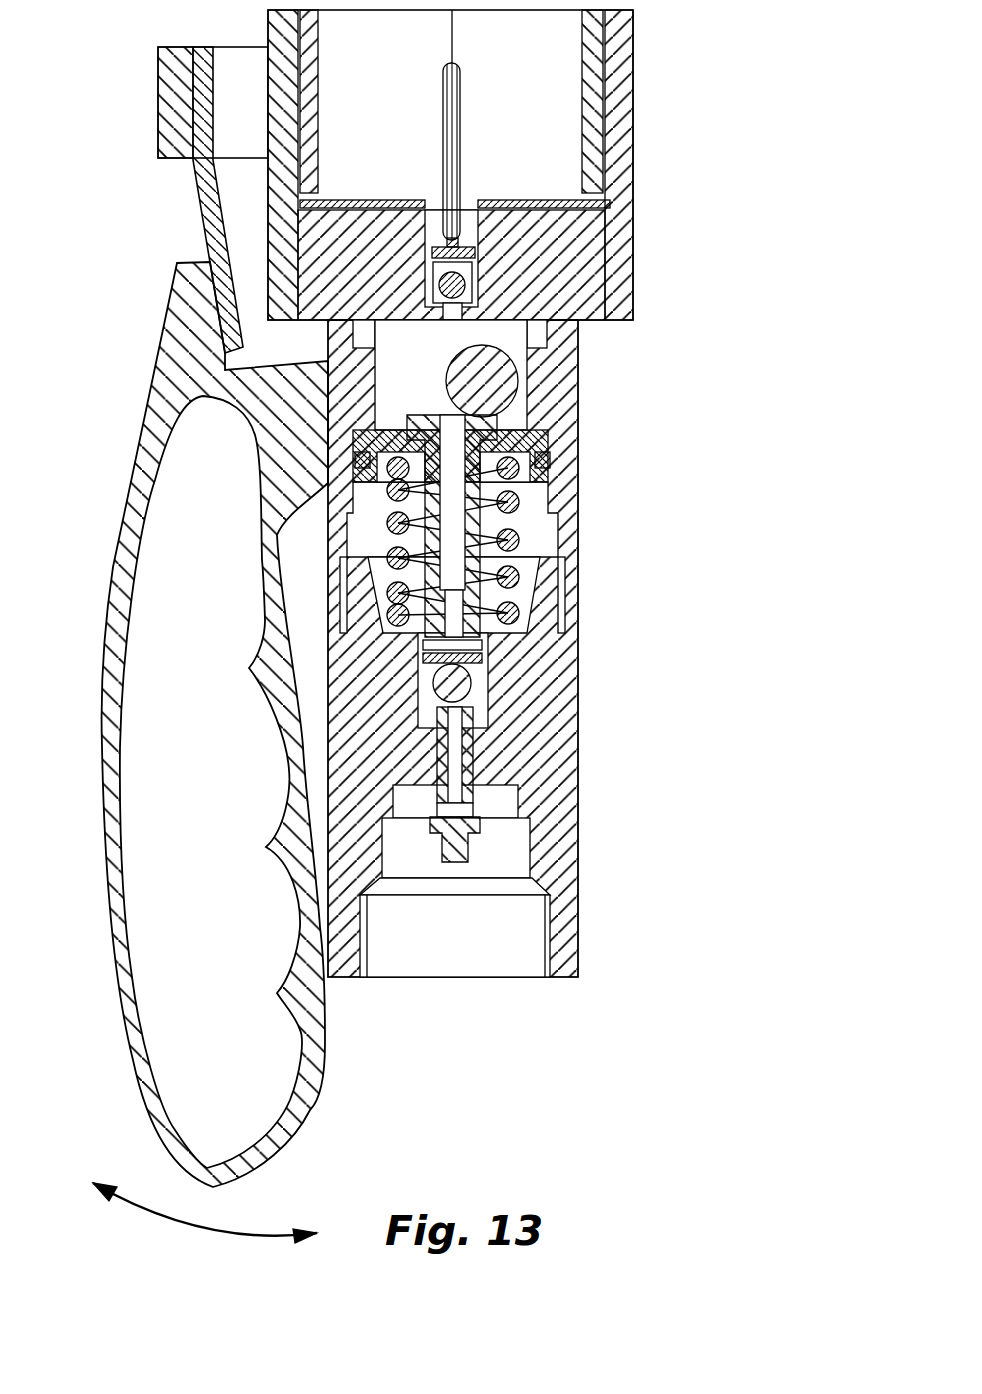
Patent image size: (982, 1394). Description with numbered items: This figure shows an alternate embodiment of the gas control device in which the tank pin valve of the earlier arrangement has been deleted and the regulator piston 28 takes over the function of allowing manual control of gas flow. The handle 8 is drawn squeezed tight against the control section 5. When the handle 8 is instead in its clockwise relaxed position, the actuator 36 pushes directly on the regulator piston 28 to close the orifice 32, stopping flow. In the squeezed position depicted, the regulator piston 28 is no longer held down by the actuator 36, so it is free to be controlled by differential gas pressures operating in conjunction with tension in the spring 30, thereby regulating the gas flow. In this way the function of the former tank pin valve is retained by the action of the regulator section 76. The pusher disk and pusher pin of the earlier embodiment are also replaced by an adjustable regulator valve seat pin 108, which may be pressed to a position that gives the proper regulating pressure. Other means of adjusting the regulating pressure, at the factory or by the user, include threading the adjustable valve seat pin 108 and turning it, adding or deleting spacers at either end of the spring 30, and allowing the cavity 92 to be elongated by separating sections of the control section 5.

The control section 5 is at (580, 940).
The handle 8 is at (100, 748).
The regulator piston 28 is at (556, 428).
The spring 30 is at (518, 548).
The orifice 32 is at (457, 700).
The actuator 36 is at (522, 378).
The regulator section 76 is at (767, 423).
The cavity 92 is at (535, 502).
The adjustable regulator valve seat pin 108 is at (455, 862).